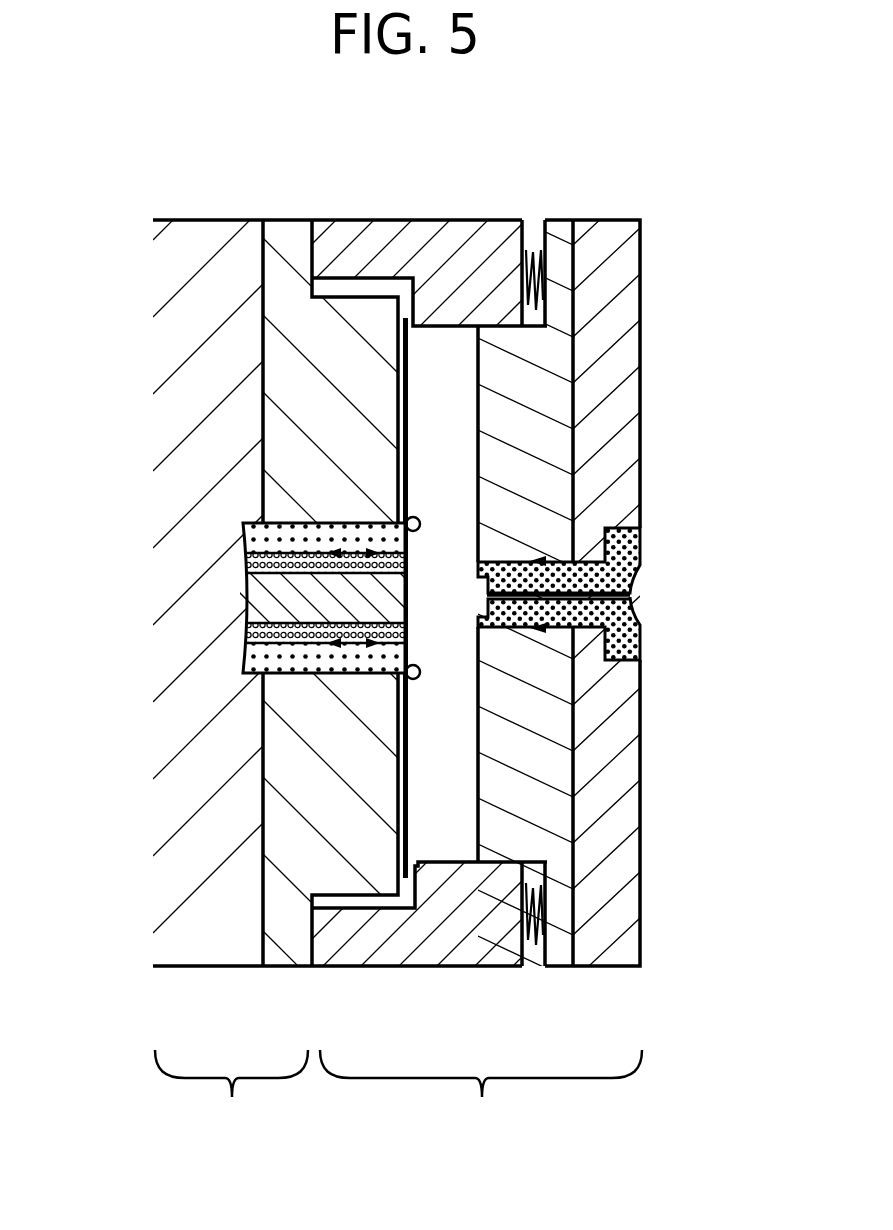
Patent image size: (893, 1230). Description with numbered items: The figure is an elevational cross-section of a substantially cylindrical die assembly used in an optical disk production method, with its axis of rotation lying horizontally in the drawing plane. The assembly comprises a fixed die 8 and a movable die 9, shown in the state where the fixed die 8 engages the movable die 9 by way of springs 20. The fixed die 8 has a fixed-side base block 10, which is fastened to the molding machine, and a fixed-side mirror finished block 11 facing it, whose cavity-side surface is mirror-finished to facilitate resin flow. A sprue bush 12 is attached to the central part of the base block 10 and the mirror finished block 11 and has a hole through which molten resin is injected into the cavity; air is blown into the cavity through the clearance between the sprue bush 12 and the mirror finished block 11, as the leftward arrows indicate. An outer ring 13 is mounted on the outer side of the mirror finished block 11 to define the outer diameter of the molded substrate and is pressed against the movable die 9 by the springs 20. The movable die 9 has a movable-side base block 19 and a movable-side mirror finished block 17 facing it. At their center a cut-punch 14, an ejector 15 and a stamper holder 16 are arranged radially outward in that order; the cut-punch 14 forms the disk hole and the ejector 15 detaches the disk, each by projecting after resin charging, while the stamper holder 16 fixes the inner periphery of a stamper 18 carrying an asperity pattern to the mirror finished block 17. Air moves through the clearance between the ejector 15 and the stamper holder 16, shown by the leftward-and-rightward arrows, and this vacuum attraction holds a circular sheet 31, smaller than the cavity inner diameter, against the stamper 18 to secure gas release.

The fixed die 8 is at (481, 1096).
The movable die 9 is at (231, 1096).
The fixed-side base block 10 is at (622, 302).
The fixed-side mirror finished block 11 is at (556, 395).
The sprue bush 12 is at (632, 548).
The outer ring 13 is at (458, 258).
The cut-punch 14 is at (258, 600).
The ejector 15 is at (245, 568).
The stamper holder 16 is at (238, 536).
The movable-side mirror finished block 17 is at (273, 418).
The stamper 18 is at (398, 770).
The movable-side base block 19 is at (213, 300).
The springs 20 is at (537, 258).
The circular sheet 31 is at (410, 803).